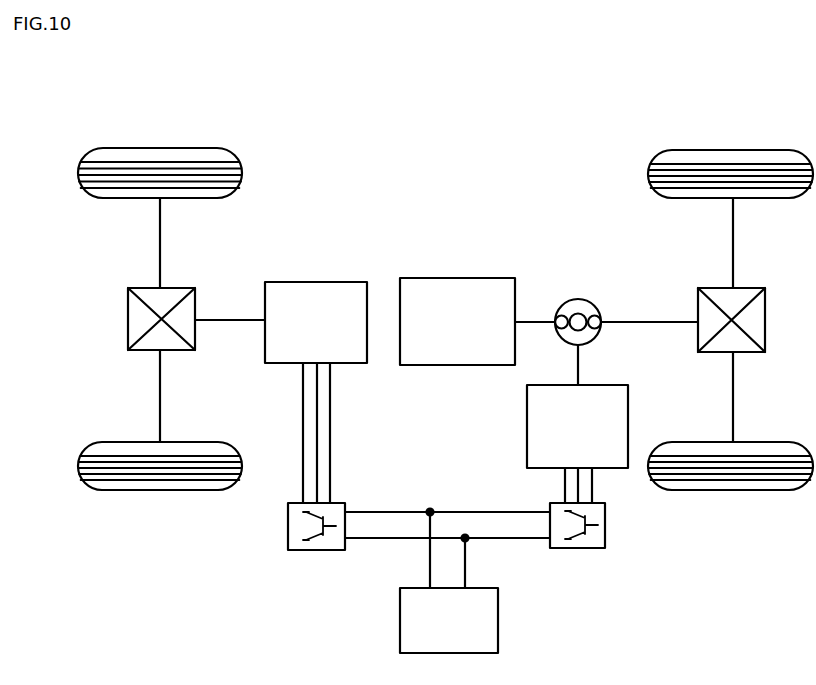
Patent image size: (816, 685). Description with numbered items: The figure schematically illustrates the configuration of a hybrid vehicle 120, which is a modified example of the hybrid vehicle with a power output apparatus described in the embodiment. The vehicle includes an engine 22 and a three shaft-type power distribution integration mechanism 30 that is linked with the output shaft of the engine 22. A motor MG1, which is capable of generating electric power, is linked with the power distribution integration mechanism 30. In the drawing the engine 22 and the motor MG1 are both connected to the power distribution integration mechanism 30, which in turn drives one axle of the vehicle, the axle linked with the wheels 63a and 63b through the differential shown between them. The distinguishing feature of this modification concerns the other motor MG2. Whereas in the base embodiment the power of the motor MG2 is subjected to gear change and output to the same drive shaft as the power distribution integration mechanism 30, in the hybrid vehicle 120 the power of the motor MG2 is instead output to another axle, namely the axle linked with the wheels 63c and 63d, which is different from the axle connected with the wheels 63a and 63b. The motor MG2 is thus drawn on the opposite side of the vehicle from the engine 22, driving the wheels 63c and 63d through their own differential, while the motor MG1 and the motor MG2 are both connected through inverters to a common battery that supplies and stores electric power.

The hybrid vehicle 120 is at (499, 125).
The engine 22 is at (457, 278).
The power distribution integration mechanism 30 is at (578, 299).
The motor MG1 is at (527, 428).
The motor MG2 is at (315, 282).
The wheel 63a is at (733, 150).
The wheel 63b is at (733, 490).
The wheel 63c is at (160, 148).
The wheel 63d is at (160, 490).